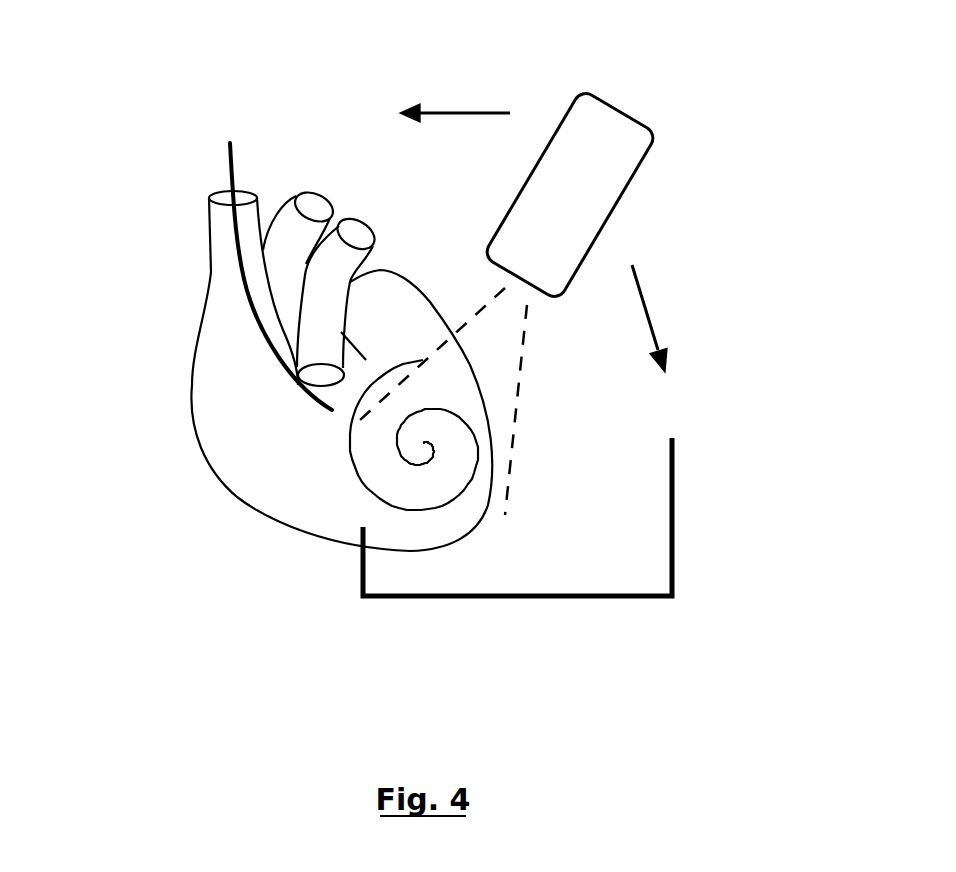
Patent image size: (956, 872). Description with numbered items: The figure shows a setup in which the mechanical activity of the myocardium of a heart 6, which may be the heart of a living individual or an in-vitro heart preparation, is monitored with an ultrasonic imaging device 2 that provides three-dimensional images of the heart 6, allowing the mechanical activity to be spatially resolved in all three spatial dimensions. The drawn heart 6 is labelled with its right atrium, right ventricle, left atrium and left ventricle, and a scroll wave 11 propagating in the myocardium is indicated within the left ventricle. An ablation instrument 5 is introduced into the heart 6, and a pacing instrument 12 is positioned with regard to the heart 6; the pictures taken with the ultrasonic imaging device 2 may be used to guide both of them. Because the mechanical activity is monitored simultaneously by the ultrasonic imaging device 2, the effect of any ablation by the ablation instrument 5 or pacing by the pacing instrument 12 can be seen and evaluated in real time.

The ultrasonic imaging device 2 is at (656, 105).
The ablation instrument 5 is at (228, 163).
The heart 6 is at (331, 445).
The scroll wave 11 is at (420, 510).
The pacing instrument 12 is at (605, 597).